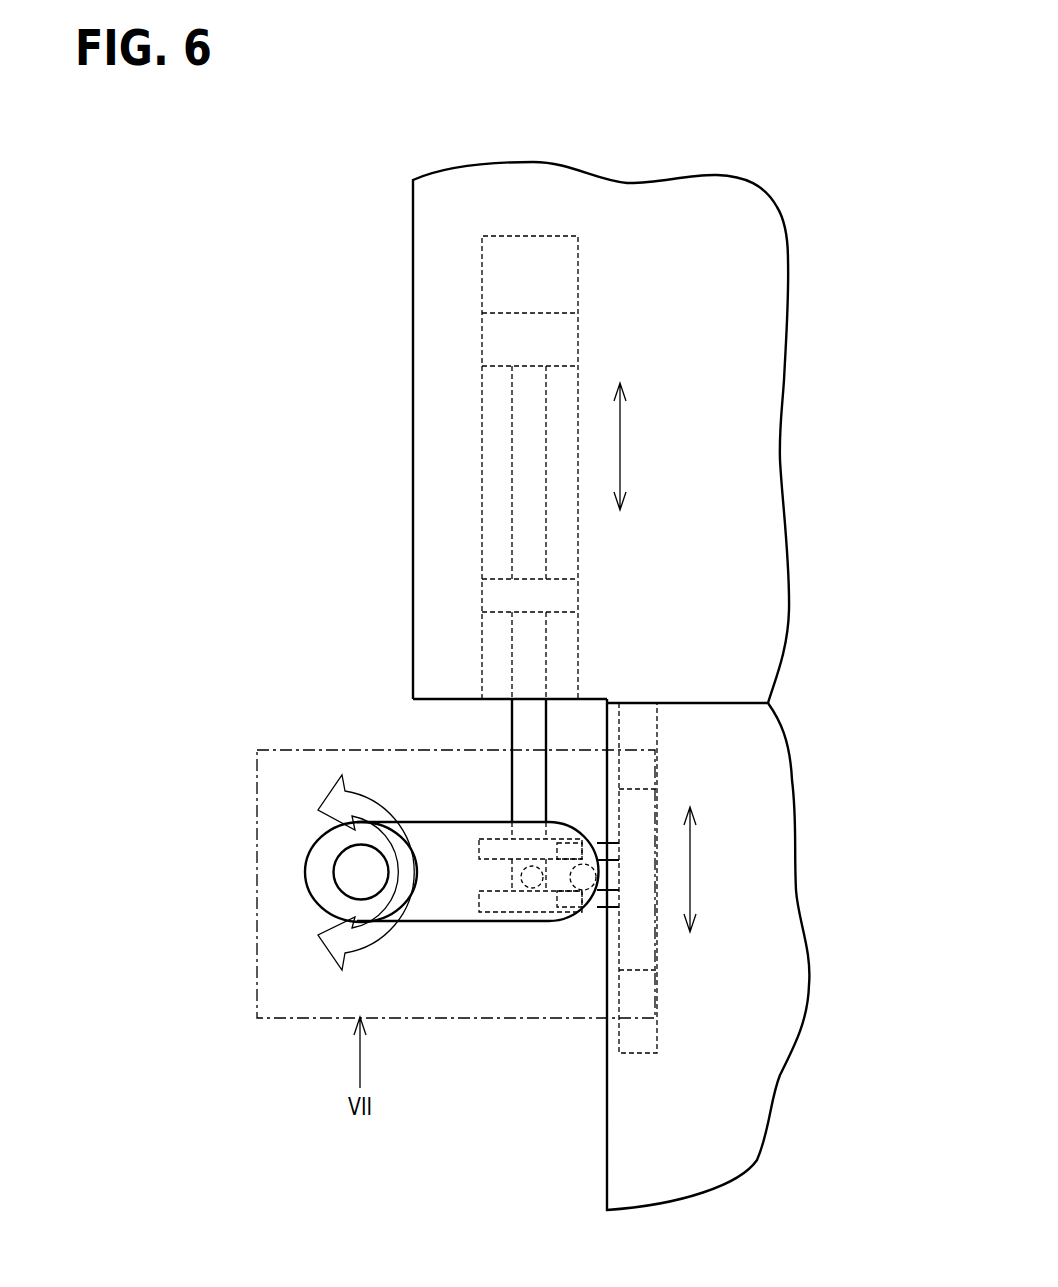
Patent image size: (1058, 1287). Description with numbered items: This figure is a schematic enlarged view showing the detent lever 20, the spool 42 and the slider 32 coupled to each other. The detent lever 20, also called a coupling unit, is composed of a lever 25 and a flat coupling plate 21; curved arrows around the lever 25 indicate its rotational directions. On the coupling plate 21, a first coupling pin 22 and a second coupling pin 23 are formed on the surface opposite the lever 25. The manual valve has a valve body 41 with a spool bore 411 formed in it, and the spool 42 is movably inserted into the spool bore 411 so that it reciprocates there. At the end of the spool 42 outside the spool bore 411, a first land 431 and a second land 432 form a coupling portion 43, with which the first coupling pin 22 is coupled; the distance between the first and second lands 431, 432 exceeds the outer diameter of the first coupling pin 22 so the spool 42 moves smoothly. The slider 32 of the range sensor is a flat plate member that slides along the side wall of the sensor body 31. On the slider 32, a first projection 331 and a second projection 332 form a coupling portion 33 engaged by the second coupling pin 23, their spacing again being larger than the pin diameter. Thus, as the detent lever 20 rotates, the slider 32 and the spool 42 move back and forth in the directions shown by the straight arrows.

The detent lever 20 is at (290, 872).
The coupling plate 21 is at (327, 886).
The first coupling pin 22 is at (527, 872).
The second coupling pin 23 is at (590, 876).
The lever 25 is at (352, 858).
The sensor body 31 is at (747, 855).
The slider 32 is at (642, 954).
The coupling portion 33 is at (557, 978).
The first projection 331 is at (599, 896).
The second projection 332 is at (582, 857).
The valve body 41 is at (437, 347).
The spool bore 411 is at (484, 284).
The spool 42 is at (520, 714).
The coupling portion 43 is at (500, 968).
The first land 431 is at (527, 902).
The second land 432 is at (483, 849).